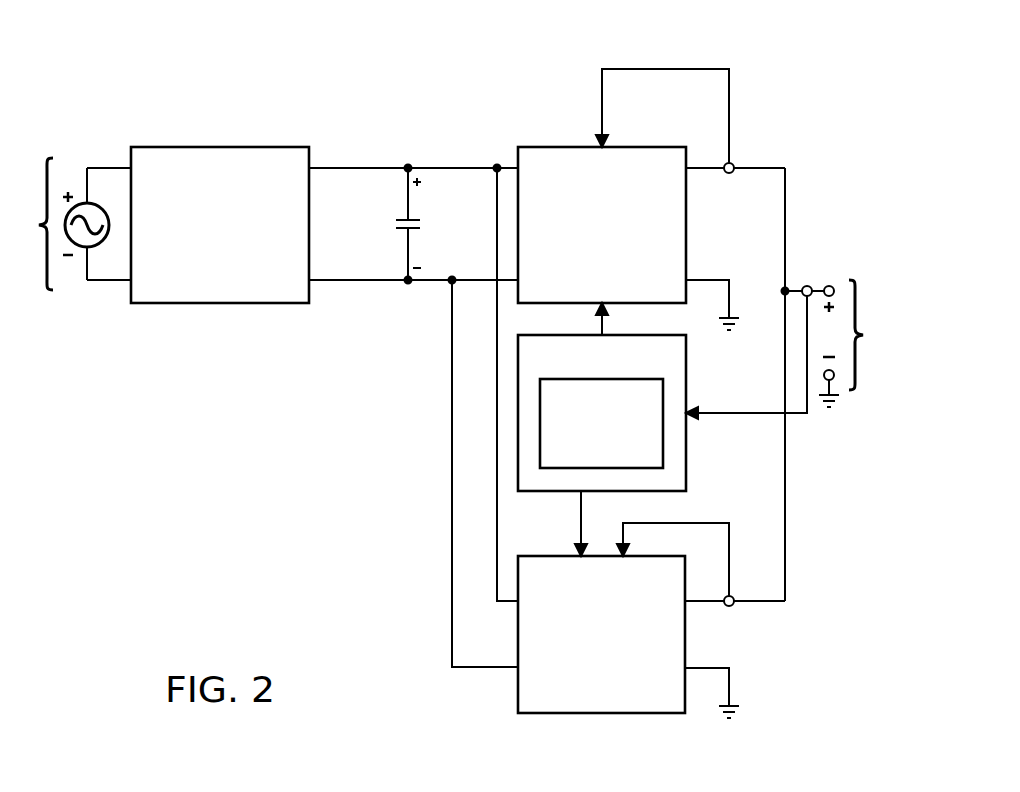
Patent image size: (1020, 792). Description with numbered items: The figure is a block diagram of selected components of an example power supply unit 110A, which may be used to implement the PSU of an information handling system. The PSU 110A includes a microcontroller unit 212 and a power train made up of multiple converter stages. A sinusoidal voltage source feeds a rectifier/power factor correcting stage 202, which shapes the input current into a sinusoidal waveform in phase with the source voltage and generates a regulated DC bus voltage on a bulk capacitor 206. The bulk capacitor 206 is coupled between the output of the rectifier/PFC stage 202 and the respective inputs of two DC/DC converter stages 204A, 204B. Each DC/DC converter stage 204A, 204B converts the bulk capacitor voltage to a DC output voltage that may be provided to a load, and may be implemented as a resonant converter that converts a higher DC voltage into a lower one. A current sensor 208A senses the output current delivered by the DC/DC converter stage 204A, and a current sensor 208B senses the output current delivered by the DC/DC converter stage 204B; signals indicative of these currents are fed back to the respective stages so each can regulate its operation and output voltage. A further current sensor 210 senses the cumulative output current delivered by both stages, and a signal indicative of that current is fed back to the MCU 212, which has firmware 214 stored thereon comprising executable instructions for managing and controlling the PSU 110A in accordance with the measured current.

The power supply unit 110A is at (483, 88).
The rectifier/power factor correcting stage 202 is at (218, 146).
The DC/DC converter stage 204A is at (647, 147).
The DC/DC converter stage 204B is at (518, 690).
The bulk capacitor 206 is at (397, 223).
The current sensor 208A is at (733, 165).
The current sensor 208B is at (732, 606).
The current sensor 210 is at (810, 285).
The microcontroller unit 212 is at (687, 433).
The firmware 214 is at (623, 456).